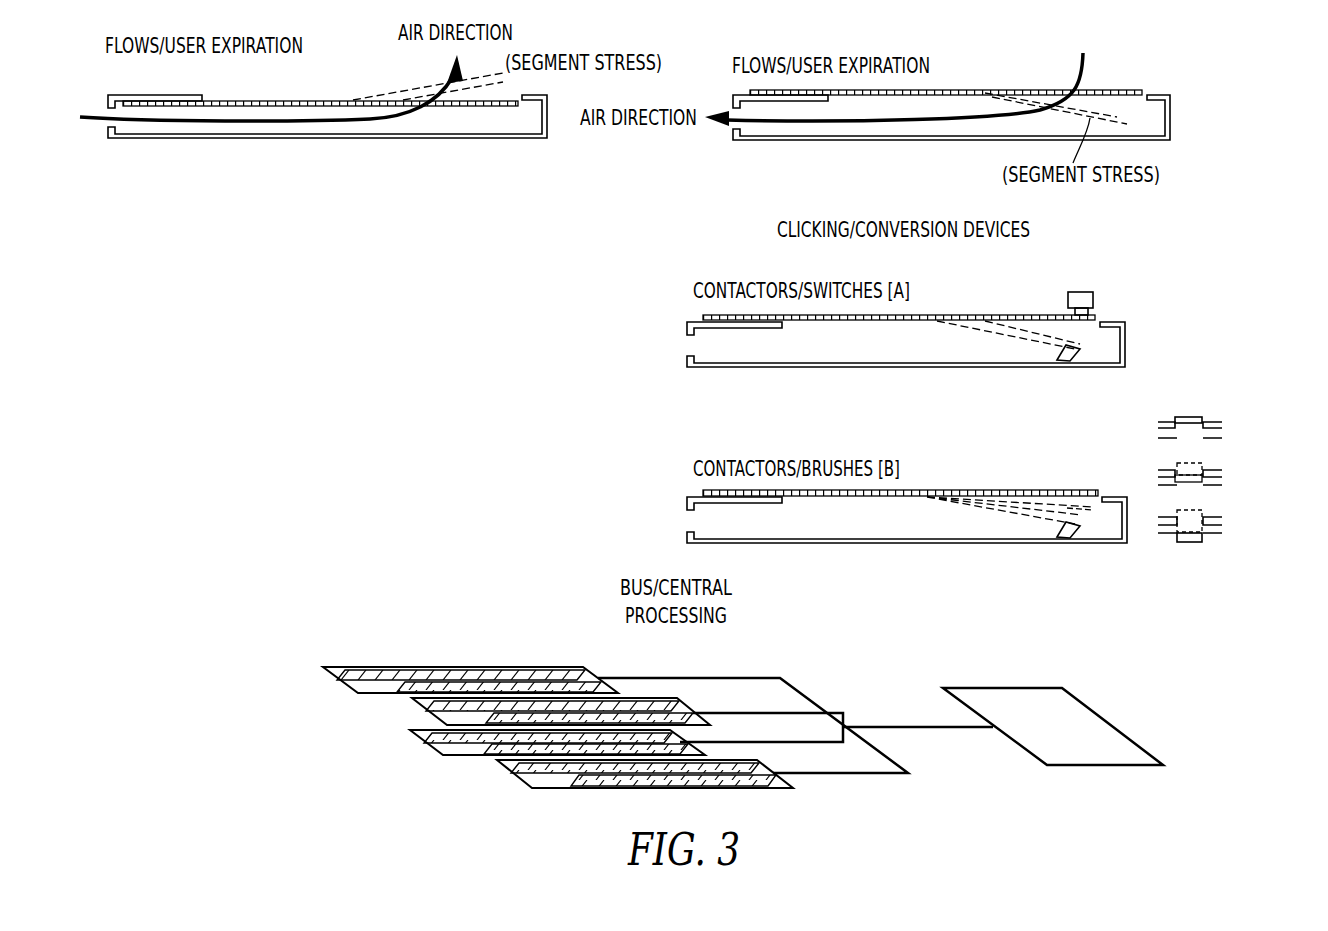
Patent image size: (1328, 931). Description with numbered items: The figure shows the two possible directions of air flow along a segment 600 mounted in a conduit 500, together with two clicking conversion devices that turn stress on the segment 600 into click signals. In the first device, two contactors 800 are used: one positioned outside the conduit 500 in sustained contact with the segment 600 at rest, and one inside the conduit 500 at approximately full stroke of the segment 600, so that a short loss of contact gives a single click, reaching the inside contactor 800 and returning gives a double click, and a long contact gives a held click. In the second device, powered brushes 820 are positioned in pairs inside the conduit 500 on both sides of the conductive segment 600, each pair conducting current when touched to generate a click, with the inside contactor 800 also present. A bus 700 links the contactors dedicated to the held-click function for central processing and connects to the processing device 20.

The conduit 500 is at (252, 140).
The segment 600 is at (248, 100).
The bus 700 is at (690, 678).
The contactor 800 is at (1076, 352).
The brushes 820 is at (1168, 482).
The processing device 20 is at (1113, 722).